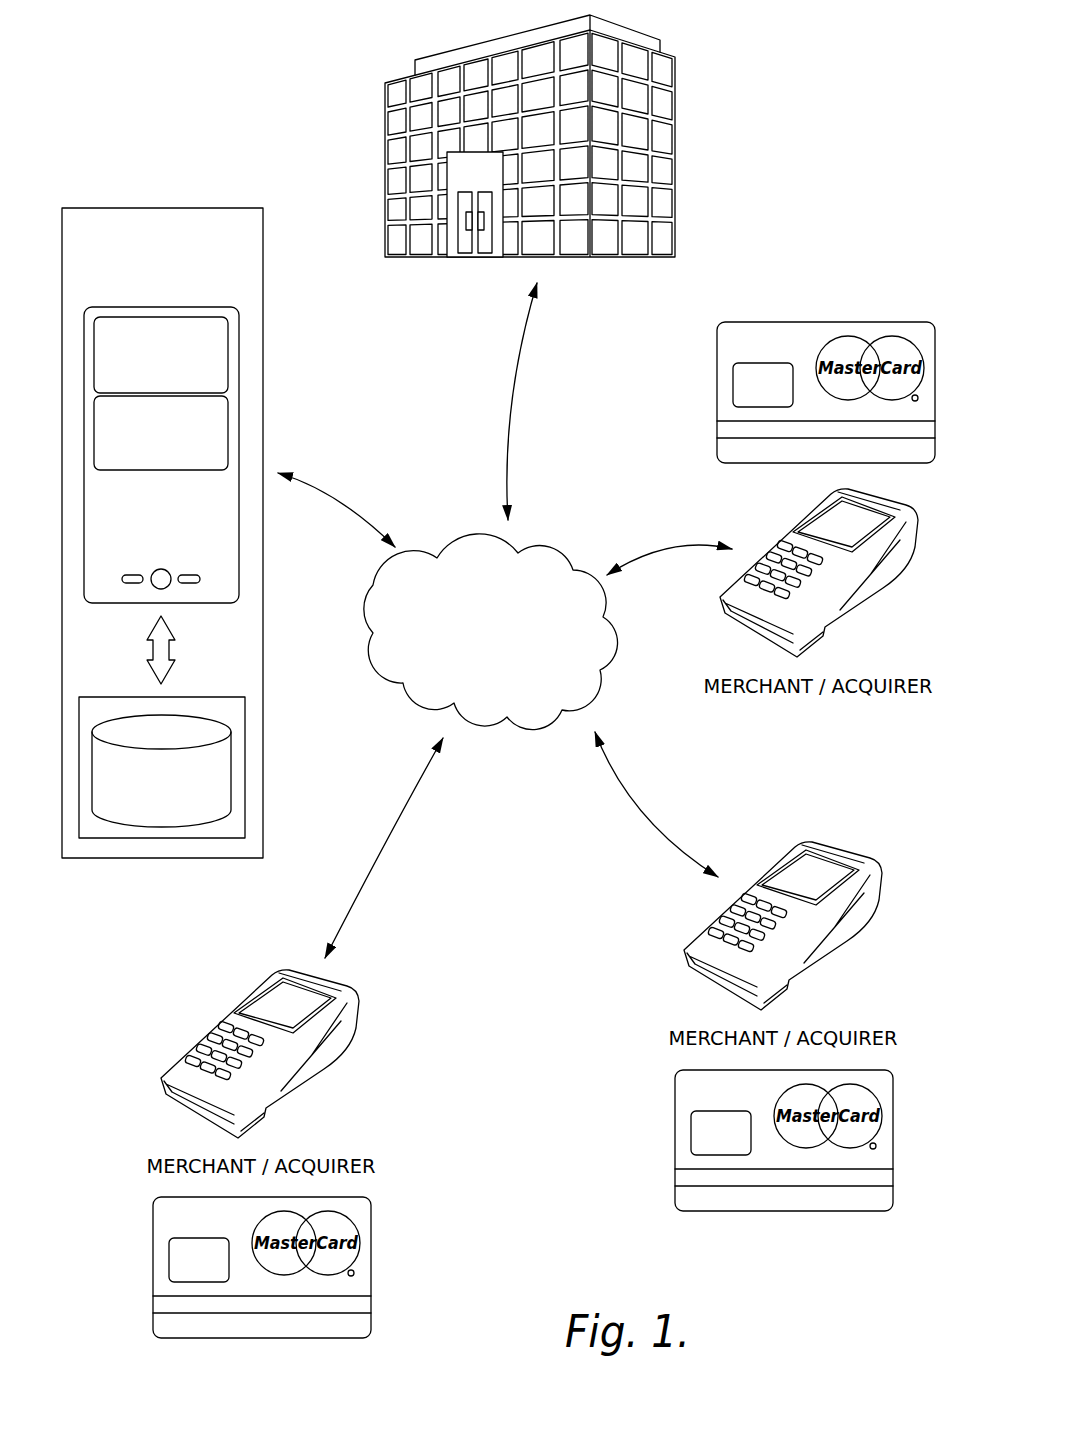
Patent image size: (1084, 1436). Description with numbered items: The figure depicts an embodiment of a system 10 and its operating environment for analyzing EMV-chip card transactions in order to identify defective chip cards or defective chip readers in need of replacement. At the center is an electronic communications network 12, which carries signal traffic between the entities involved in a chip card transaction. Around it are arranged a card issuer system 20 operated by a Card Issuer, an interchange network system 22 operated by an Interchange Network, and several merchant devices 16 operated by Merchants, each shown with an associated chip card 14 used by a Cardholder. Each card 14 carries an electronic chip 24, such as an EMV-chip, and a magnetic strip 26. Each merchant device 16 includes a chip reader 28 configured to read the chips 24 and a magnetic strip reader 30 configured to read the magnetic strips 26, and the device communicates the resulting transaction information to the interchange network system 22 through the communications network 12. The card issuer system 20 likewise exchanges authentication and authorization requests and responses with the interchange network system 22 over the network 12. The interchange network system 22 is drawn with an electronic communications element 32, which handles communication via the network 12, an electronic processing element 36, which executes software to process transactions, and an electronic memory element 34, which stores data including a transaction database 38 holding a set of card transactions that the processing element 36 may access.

The system 10 is at (805, 47).
The electronic communications network 12 is at (491, 632).
The chip card 14 is at (840, 318).
The merchant device 16 is at (770, 528).
The card issuer system 20 is at (380, 58).
The interchange network system 22 is at (210, 533).
The electronic chip 24 is at (730, 378).
The magnetic strip 26 is at (720, 433).
The chip reader 28 is at (750, 620).
The magnetic strip reader 30 is at (862, 590).
The electronic communications element 32 is at (161, 355).
The electronic memory element 34 is at (213, 703).
The electronic processing element 36 is at (161, 433).
The transaction database 38 is at (161, 771).